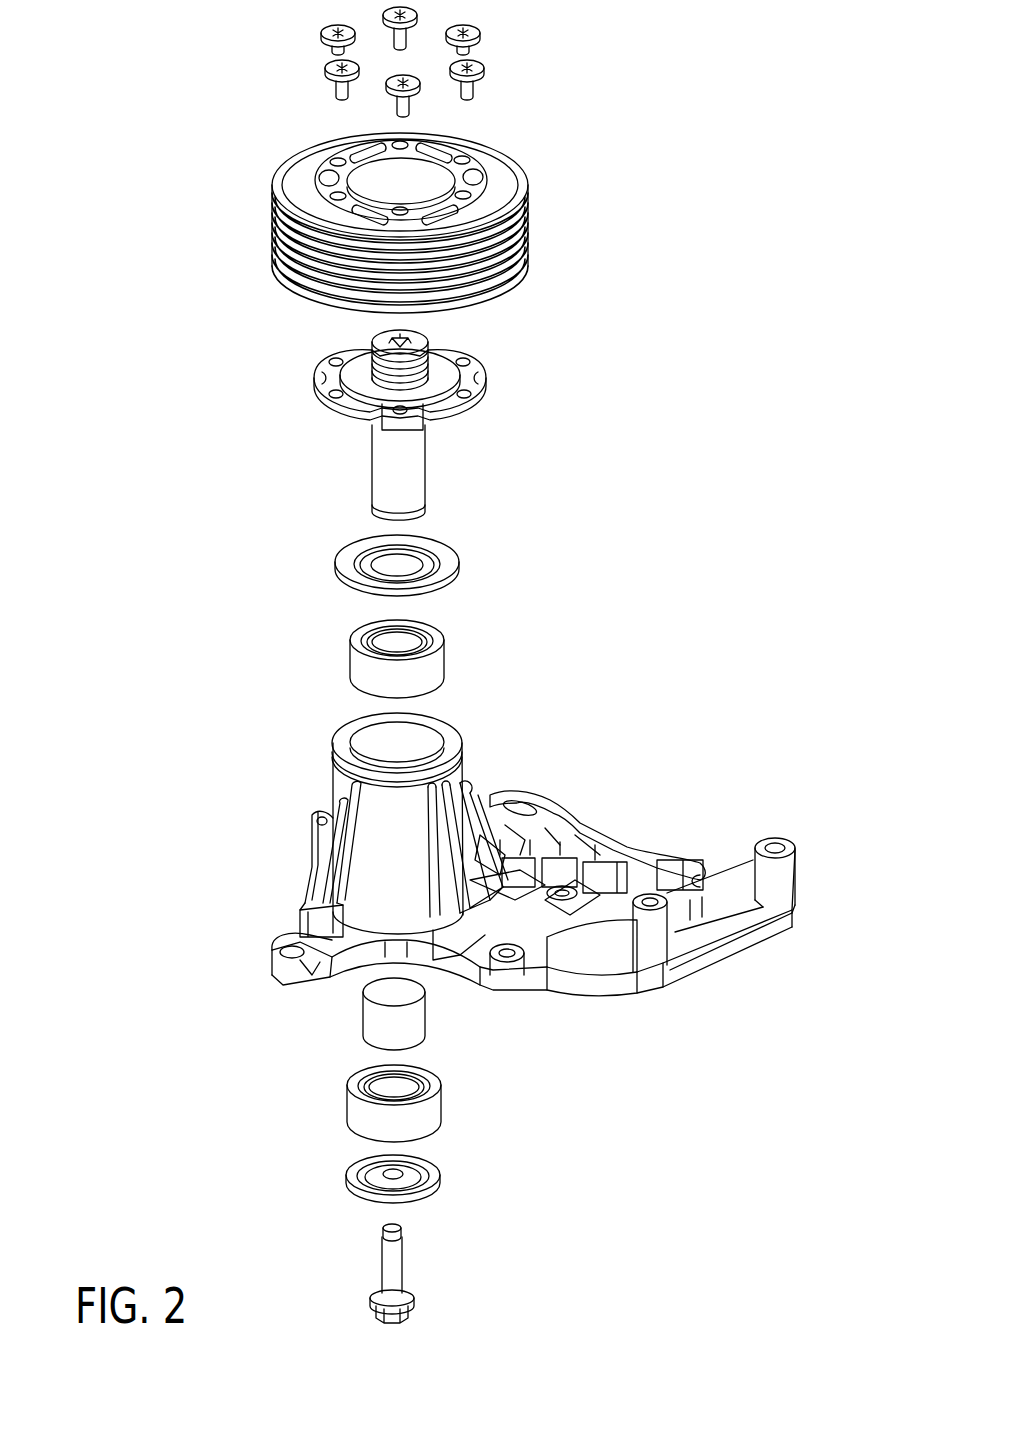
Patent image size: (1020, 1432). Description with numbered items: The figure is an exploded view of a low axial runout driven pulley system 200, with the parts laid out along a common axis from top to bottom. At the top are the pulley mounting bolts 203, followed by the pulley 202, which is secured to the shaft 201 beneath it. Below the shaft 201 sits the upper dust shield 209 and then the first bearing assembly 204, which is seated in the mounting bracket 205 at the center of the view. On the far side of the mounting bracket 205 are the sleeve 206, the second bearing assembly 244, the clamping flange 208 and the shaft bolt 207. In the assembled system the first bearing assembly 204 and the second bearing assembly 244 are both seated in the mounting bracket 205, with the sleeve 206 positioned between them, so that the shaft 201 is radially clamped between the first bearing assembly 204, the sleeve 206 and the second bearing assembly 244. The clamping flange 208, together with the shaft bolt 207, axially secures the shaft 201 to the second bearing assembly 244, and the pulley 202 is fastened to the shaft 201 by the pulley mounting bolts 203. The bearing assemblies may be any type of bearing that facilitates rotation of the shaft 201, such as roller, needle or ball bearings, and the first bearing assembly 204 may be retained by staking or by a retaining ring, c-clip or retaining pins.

The low axial runout driven pulley system 200 is at (240, 482).
The shaft 201 is at (420, 457).
The pulley 202 is at (528, 206).
The pulley mounting bolts 203 is at (557, 68).
The first bearing assembly 204 is at (445, 660).
The mounting bracket 205 is at (603, 830).
The sleeve 206 is at (370, 1022).
The shaft bolt 207 is at (397, 1277).
The clamping flange 208 is at (440, 1182).
The upper dust shield 209 is at (455, 569).
The second bearing assembly 244 is at (440, 1115).